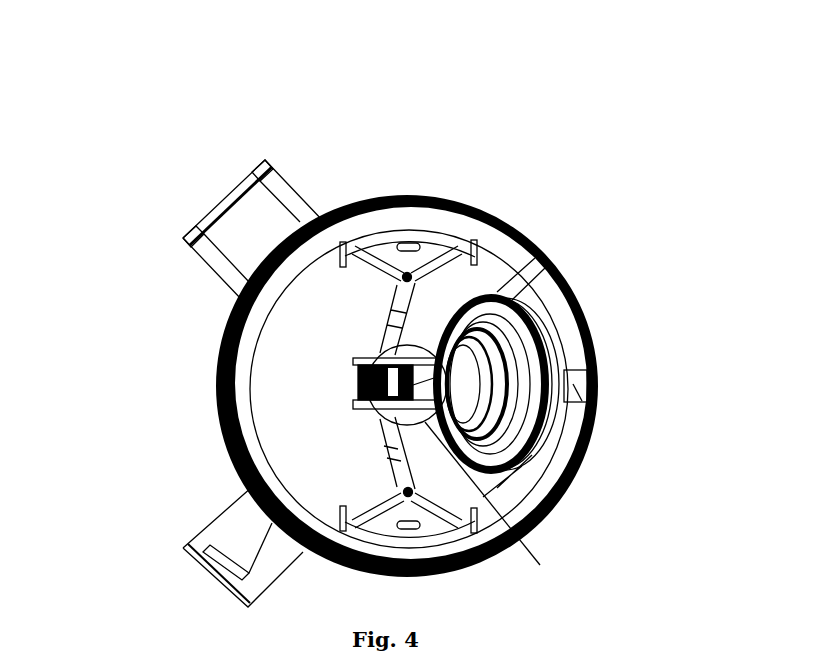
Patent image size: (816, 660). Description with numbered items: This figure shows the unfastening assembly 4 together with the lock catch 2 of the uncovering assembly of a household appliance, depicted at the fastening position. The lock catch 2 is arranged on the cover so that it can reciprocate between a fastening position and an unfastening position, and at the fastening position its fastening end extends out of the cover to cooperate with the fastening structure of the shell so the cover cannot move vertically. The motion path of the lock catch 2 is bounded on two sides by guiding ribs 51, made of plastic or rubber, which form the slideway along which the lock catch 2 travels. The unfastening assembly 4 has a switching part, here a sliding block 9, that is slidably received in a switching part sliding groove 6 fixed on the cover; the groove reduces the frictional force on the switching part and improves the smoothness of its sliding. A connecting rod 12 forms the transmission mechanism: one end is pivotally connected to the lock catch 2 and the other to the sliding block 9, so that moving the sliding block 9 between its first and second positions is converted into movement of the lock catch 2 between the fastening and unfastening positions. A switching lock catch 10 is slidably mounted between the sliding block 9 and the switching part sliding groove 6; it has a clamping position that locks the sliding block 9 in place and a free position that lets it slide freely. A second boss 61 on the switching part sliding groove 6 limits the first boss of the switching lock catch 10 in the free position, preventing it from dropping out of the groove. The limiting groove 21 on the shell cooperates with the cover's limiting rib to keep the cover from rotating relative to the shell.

The lock catch 2 is at (378, 252).
The guiding rib 51 is at (475, 258).
The connecting rod 12 is at (402, 293).
The switching part sliding groove 6 is at (355, 360).
The second boss 61 is at (355, 372).
The sliding block 9 is at (355, 408).
The switching lock catch 10 is at (545, 320).
The limiting groove 21 is at (583, 410).
The unfastening assembly 4 is at (540, 565).